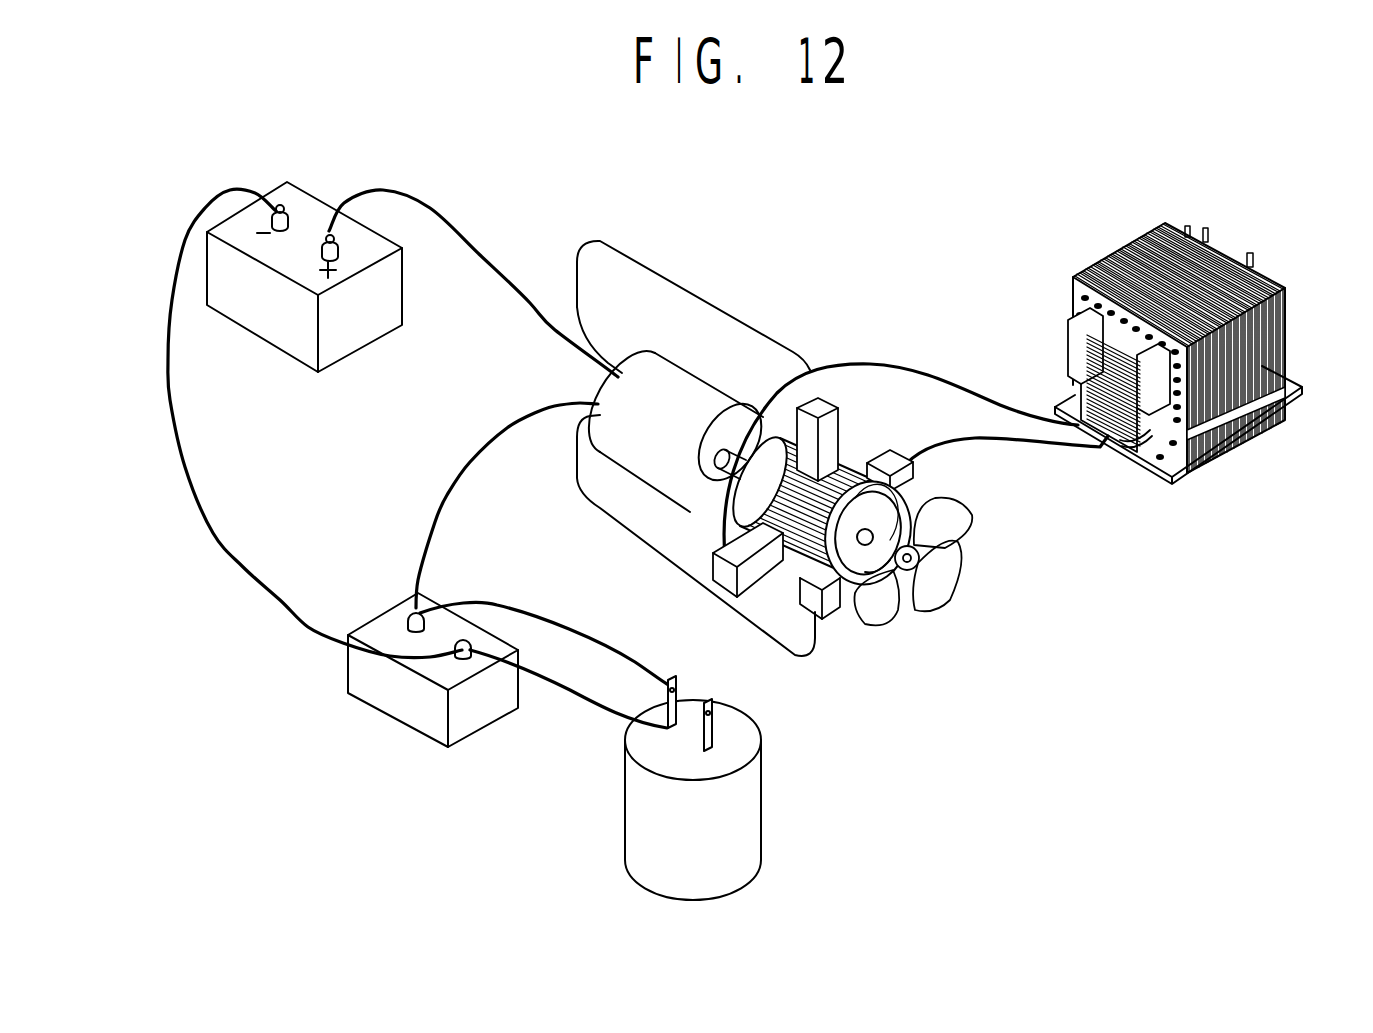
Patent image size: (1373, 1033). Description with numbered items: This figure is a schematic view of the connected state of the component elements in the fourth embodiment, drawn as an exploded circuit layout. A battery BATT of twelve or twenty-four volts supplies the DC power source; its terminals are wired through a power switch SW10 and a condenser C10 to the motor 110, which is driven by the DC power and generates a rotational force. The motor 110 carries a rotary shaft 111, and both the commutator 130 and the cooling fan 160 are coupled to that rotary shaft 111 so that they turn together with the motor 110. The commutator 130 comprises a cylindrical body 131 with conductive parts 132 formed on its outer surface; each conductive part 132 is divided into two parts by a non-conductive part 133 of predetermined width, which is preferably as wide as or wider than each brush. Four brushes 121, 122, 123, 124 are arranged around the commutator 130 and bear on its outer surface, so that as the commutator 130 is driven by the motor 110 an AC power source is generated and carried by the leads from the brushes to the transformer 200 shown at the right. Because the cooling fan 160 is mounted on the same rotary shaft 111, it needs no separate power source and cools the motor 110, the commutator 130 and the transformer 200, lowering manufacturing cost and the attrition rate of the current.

The motor 110 is at (663, 367).
The rotary shaft 111 is at (723, 460).
The brush 121 is at (818, 400).
The brush 122 is at (730, 600).
The brush 123 is at (840, 615).
The brush 124 is at (900, 455).
The commutator 130 is at (945, 479).
The cylindrical body 131 is at (837, 570).
The conductive parts 132 is at (915, 495).
The non-conductive part 133 is at (833, 490).
The cooling fan 160 is at (940, 587).
The transformer 200 is at (1285, 260).
The battery BATT is at (304, 258).
The power switch SW10 is at (433, 690).
The condenser C10 is at (726, 788).